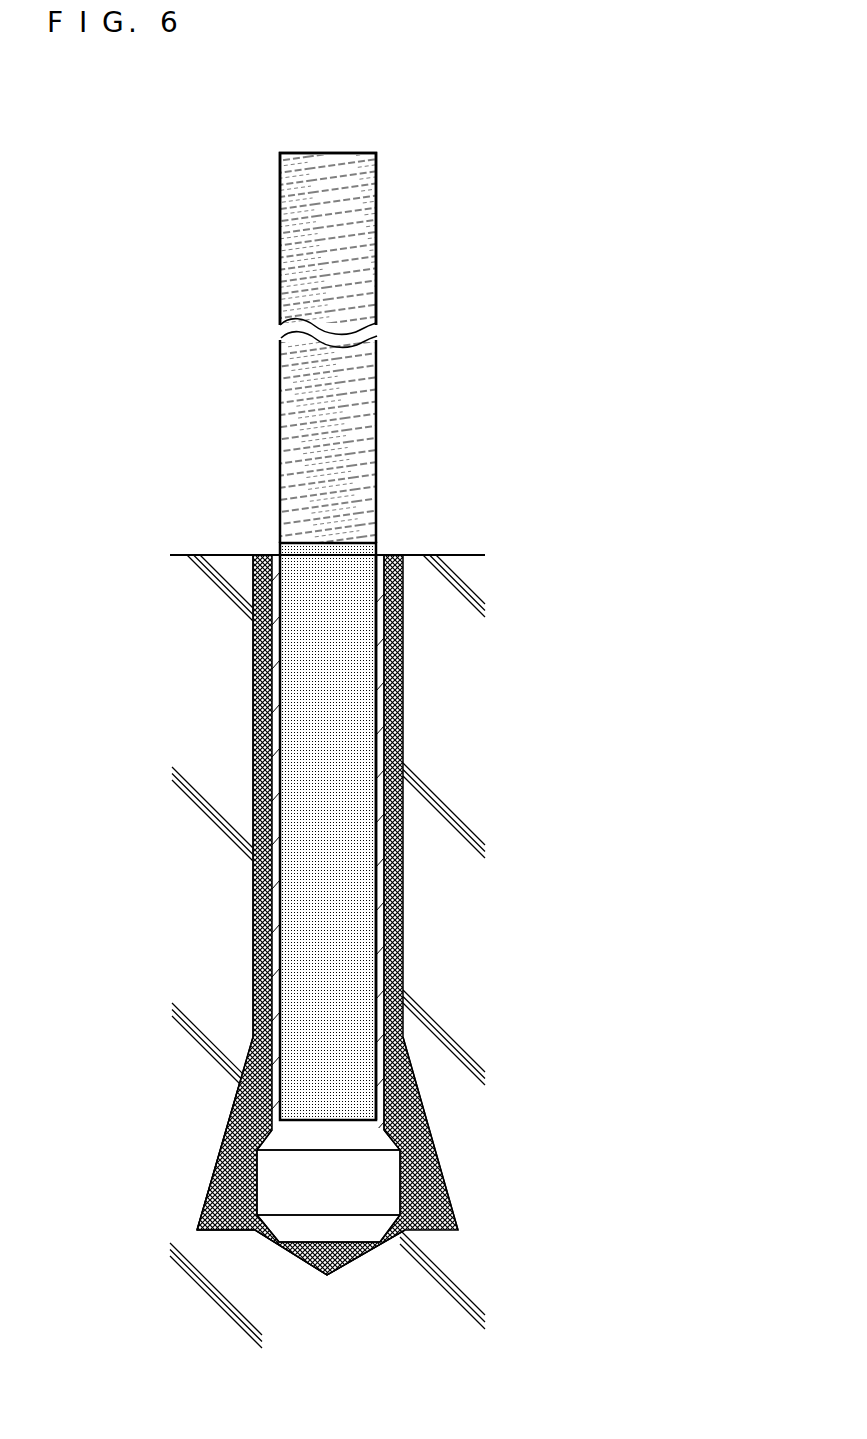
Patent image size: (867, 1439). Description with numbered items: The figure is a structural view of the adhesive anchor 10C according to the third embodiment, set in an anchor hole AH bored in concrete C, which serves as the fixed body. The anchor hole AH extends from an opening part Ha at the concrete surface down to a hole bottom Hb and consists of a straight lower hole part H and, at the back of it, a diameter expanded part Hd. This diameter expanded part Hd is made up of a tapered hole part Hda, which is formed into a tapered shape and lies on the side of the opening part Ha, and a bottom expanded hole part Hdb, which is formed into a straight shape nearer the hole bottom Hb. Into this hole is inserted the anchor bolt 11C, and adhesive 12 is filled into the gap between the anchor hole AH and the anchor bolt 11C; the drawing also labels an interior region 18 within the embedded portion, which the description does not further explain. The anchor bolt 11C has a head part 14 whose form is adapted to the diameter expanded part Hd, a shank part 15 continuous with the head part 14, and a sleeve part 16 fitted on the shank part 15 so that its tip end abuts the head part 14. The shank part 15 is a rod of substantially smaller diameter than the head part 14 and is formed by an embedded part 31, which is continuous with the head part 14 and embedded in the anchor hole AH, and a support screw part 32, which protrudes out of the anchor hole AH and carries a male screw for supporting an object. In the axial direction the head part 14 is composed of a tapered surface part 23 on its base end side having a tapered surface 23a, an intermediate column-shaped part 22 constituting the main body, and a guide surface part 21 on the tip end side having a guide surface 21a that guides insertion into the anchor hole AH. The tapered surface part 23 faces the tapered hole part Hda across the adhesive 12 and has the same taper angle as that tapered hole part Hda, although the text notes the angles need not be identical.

The adhesive anchor 10C is at (357, 656).
The anchor bolt 11C is at (292, 116).
The support screw part 32 is at (378, 450).
The opening part Ha is at (262, 553).
The anchor hole AH is at (398, 543).
The concrete C is at (462, 553).
The adhesive 12 is at (404, 715).
The lower hole part H is at (253, 892).
The embedded part 31 is at (382, 852).
The filler 18 is at (360, 886).
The shank part 15 is at (393, 925).
The sleeve part 16 is at (402, 976).
The diameter expanded part Hd is at (230, 1112).
The tapered hole part Hda is at (217, 1160).
The bottom expanded hole part Hdb is at (219, 1232).
The hole bottom Hb is at (309, 1263).
The guide surface 21a is at (392, 1238).
The tapered surface part 23 is at (353, 1133).
The tapered surface 23a is at (433, 1140).
The head part 14 is at (418, 1168).
The column-shaped part 22 is at (385, 1199).
The guide surface part 21 is at (373, 1223).